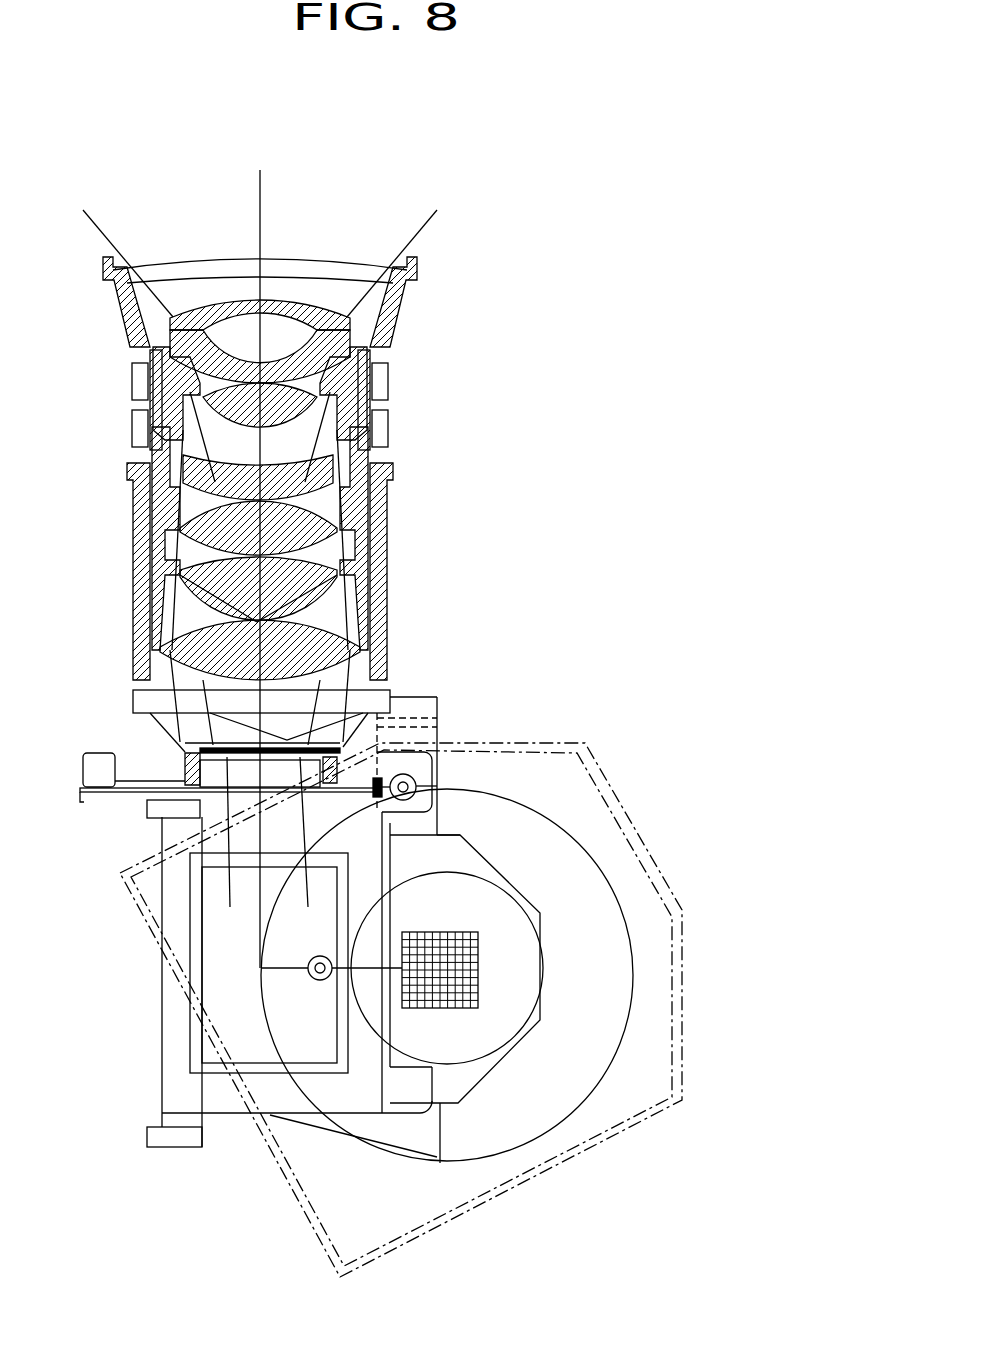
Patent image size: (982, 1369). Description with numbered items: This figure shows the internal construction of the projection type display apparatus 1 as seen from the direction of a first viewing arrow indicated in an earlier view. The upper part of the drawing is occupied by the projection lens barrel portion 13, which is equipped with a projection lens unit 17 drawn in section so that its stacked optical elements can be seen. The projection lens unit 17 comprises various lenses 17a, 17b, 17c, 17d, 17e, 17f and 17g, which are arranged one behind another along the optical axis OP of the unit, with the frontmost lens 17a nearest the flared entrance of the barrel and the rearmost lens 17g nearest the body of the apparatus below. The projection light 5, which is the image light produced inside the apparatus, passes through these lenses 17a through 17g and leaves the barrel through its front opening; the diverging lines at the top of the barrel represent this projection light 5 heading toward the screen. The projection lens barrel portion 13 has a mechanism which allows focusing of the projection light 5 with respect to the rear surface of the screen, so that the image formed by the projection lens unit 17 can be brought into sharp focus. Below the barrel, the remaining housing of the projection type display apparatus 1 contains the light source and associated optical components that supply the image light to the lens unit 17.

The projection type display apparatus 1 is at (595, 412).
The projection light 5 is at (420, 235).
The projection lens barrel portion 13 is at (400, 312).
The projection lens unit 17 is at (207, 306).
The lens 17a is at (285, 303).
The lens 17b is at (363, 353).
The lens 17c is at (383, 417).
The lens 17d is at (370, 487).
The lens 17e is at (377, 553).
The lens 17f is at (370, 612).
The lens 17g is at (373, 660).
The optical axis OP is at (263, 200).